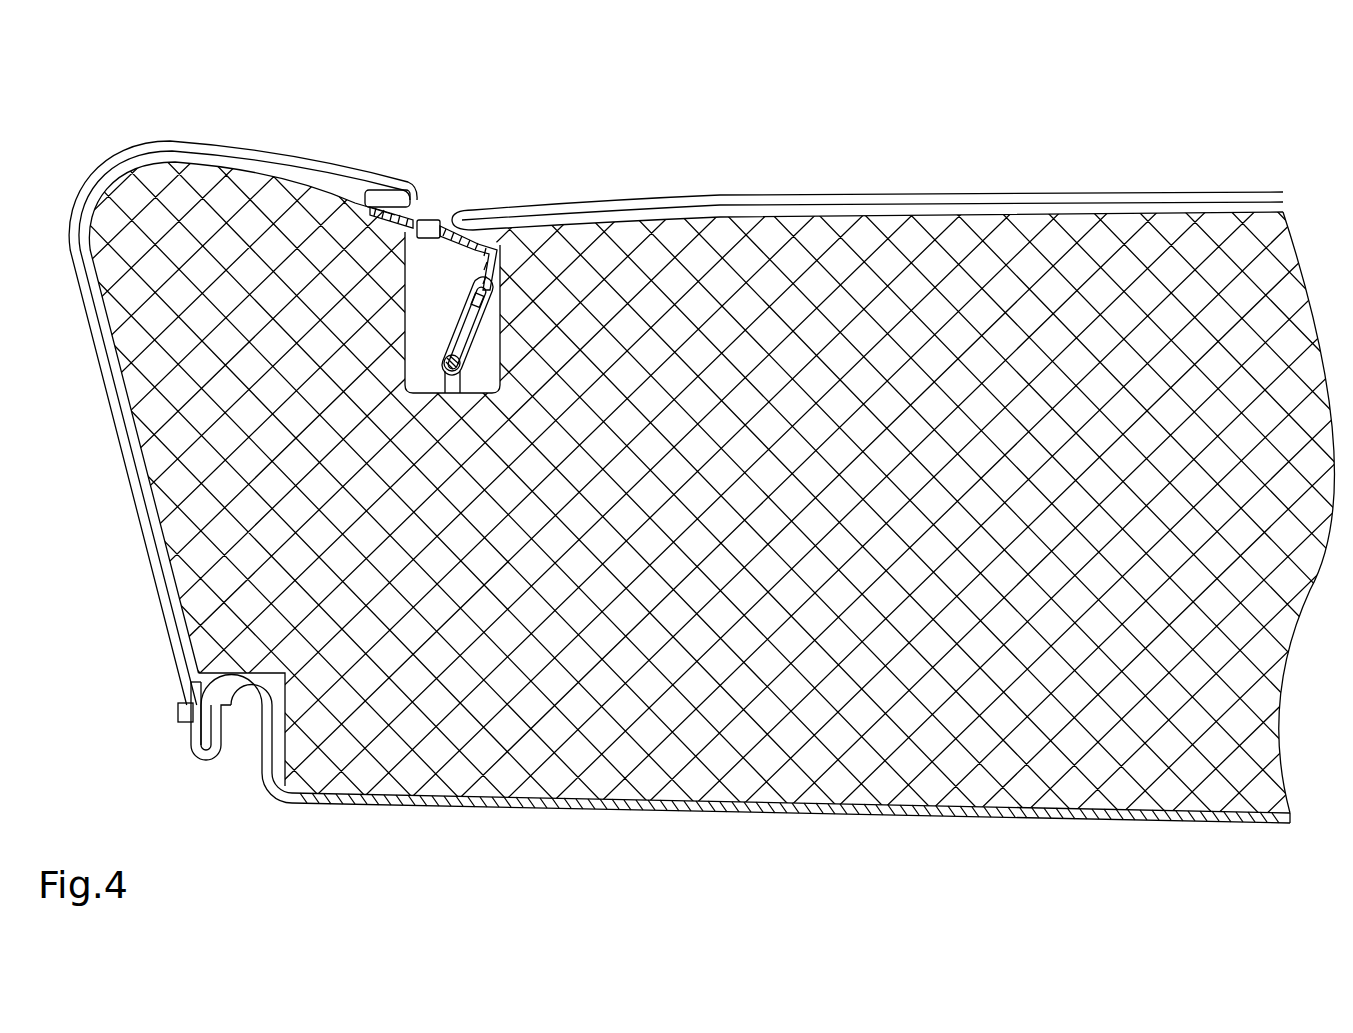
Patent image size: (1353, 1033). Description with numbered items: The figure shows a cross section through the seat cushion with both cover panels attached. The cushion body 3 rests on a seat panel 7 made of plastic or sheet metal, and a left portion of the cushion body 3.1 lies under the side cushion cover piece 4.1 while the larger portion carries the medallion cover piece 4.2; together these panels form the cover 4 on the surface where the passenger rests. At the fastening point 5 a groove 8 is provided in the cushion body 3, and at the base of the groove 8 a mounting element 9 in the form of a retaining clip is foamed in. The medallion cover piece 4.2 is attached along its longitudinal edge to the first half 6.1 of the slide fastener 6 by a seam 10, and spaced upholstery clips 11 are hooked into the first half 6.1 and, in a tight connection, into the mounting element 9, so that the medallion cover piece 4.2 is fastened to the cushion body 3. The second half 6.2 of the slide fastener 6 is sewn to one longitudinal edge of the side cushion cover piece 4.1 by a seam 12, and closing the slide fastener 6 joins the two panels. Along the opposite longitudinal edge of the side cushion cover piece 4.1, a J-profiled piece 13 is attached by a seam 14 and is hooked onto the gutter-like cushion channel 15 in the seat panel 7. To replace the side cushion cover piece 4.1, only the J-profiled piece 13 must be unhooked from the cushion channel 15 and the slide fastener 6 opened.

The cushion body 3 is at (878, 537).
The panel section 3.1 is at (290, 383).
The cover 4 is at (700, 396).
The side cushion cover piece 4.1 is at (258, 158).
The medallion cover piece 4.2 is at (867, 177).
The fastening point 5 is at (489, 244).
The slide fastener 6 is at (432, 151).
The first half of the slide fastener 6.1 is at (457, 222).
The second half of the slide fastener 6.2 is at (430, 218).
The seat panel 7 is at (623, 812).
The groove 8 is at (444, 308).
The mounting element 9 is at (449, 378).
The seam 10 is at (482, 215).
The upholstery clip 11 is at (486, 331).
The seam 12 is at (398, 190).
The J-profiled piece 13 is at (219, 760).
The seam 14 is at (176, 712).
The cushion channel 15 is at (241, 718).